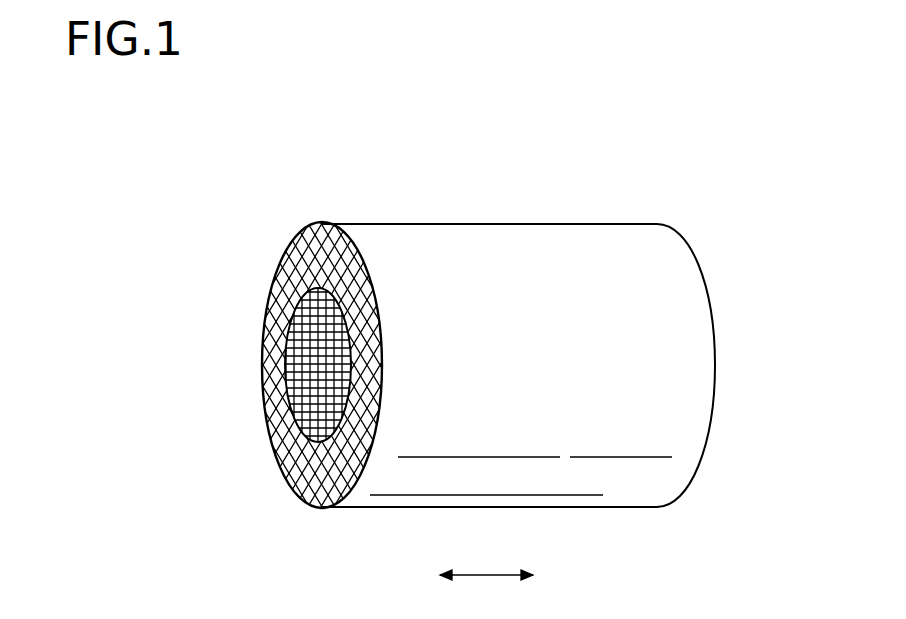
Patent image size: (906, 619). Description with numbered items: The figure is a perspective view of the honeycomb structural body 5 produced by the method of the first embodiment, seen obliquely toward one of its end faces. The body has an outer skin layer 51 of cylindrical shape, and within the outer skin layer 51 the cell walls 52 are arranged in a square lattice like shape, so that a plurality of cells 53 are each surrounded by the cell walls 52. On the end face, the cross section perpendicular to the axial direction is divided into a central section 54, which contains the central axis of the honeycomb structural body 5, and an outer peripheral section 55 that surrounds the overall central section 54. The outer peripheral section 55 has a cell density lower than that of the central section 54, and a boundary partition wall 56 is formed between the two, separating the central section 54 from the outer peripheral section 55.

The honeycomb structural body 5 is at (570, 178).
The outer skin layer 51 is at (620, 477).
The cell walls 52 is at (345, 268).
The cells 53 is at (263, 357).
The central section 54 is at (297, 236).
The outer peripheral section 55 is at (314, 470).
The boundary partition wall 56 is at (313, 309).